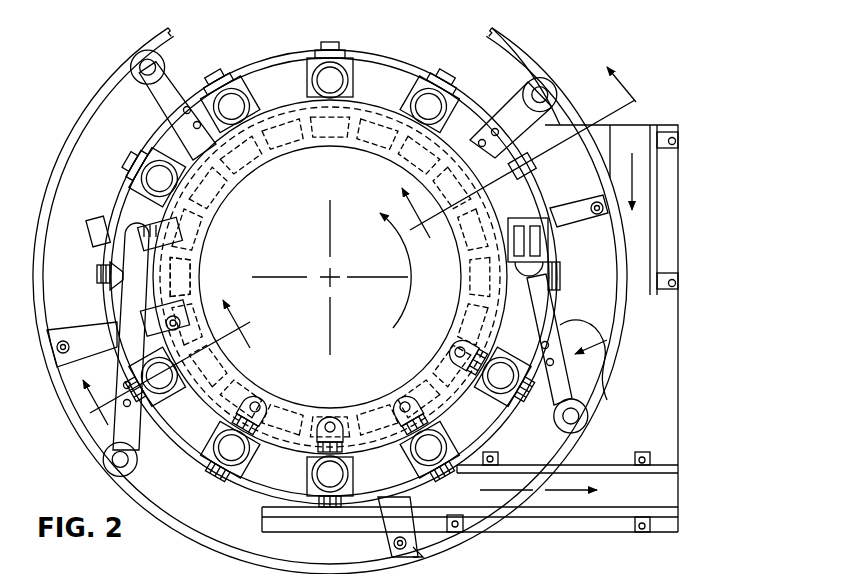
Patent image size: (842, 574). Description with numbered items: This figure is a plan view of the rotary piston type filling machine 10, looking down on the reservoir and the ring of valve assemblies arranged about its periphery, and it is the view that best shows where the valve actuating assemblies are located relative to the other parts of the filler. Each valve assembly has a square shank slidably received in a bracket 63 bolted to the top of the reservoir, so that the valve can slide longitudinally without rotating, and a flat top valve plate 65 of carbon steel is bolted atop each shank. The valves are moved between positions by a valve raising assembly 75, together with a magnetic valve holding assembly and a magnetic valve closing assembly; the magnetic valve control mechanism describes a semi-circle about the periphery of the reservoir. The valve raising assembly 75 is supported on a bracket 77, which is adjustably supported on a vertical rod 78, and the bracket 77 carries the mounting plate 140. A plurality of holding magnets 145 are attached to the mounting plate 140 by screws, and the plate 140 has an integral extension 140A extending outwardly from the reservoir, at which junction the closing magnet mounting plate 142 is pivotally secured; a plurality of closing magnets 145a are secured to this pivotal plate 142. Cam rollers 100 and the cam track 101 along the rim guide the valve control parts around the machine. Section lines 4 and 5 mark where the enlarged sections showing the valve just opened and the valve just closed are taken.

The filling machine 10 is at (680, 416).
The section line 4- 4 is at (522, 160).
The section line 5- 5 is at (173, 368).
The bracket 63 is at (393, 414).
The flat top valve plate 65 is at (338, 410).
The valve raising assembly 75 is at (553, 243).
The bracket 77 is at (543, 405).
The vertical rod 78 is at (597, 410).
The cam roller 100 is at (513, 107).
The cam track 101 is at (556, 68).
The mounting plate 140 is at (356, 146).
The integral extension of mounting plate 140A is at (137, 227).
The closing magnet mounting plate 142 is at (190, 297).
The holding magnets 145 is at (283, 133).
The closing magnets 145a is at (183, 277).